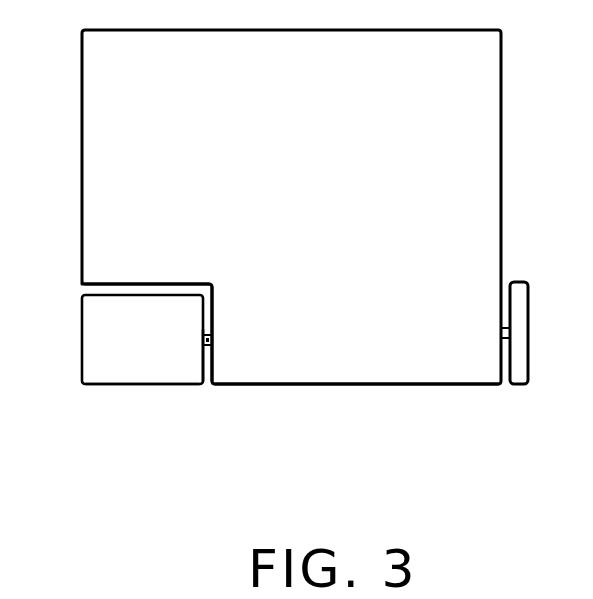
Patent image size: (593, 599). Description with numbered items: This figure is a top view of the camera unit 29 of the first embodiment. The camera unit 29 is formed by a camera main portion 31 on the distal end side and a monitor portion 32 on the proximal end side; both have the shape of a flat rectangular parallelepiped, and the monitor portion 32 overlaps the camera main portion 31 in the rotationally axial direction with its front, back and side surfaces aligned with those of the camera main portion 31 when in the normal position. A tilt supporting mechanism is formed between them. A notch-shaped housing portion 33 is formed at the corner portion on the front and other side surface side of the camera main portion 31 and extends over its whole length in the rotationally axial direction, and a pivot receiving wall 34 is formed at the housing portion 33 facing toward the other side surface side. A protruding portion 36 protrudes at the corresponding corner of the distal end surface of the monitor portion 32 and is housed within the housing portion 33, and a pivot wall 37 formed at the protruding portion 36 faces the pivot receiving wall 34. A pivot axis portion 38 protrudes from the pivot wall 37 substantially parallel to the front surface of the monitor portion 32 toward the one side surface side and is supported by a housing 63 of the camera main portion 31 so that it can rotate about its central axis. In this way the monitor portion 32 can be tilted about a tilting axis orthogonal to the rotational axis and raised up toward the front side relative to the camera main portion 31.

The camera unit 29 is at (290, 271).
The camera main portion 31 is at (478, 134).
The monitor portion 32 is at (124, 345).
The housing portion 33 is at (140, 282).
The pivot receiving wall 34 is at (215, 301).
The protruding portion 36 is at (145, 375).
The pivot wall 37 is at (203, 350).
The pivot axis portion 38 is at (216, 348).
The housing 63 is at (362, 375).